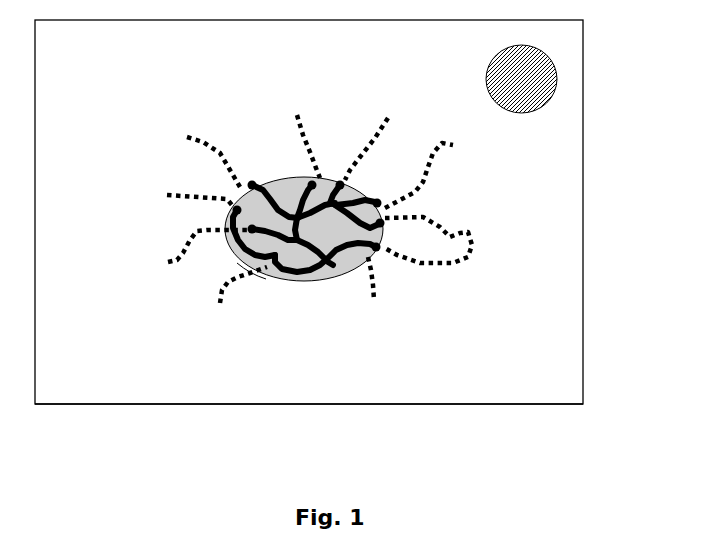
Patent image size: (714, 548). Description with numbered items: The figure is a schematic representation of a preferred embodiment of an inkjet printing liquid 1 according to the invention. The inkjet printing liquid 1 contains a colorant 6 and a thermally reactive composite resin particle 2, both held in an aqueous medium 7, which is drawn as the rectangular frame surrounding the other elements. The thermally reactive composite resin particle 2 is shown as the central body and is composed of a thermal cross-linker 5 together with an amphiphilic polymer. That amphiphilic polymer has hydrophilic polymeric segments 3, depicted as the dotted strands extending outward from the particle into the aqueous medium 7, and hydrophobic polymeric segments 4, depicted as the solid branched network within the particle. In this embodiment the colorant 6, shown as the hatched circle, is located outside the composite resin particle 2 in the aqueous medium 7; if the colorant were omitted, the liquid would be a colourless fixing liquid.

The inkjet printing liquid 1 is at (90, 404).
The thermally reactive composite resin particle 2 is at (295, 280).
The hydrophilic polymeric segment of amphiphilic polymer 3 is at (210, 142).
The hydrophobic polymeric segment of amphiphilic polymer 4 is at (257, 183).
The thermal cross-linker 5 is at (247, 258).
The colorant 6 is at (508, 92).
The aqueous medium 7 is at (465, 352).